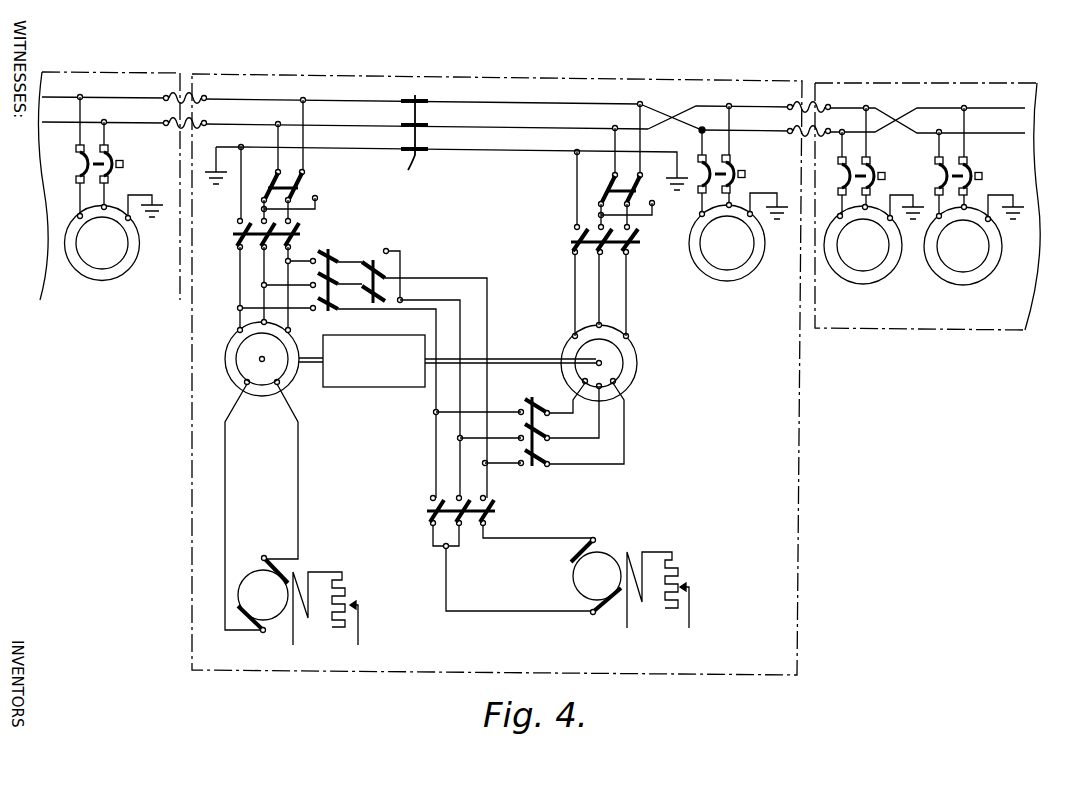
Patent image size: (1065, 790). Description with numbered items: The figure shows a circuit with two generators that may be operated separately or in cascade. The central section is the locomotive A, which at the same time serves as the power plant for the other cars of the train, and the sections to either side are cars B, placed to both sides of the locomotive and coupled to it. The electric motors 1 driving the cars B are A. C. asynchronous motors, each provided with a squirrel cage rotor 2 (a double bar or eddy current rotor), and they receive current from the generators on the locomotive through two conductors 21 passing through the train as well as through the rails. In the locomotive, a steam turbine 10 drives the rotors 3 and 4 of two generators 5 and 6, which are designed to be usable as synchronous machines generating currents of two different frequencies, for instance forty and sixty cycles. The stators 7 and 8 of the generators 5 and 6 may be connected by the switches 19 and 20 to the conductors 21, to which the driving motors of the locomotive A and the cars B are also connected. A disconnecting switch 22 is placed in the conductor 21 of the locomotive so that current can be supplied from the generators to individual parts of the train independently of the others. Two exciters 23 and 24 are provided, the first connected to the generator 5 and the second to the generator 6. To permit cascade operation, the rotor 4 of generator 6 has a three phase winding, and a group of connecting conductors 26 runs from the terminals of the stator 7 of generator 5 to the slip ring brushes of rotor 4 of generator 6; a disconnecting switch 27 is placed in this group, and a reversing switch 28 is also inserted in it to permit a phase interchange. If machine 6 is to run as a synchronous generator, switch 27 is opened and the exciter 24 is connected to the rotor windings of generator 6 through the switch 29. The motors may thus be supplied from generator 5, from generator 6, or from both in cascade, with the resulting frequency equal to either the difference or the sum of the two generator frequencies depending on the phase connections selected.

The electric motors 1 is at (140, 248).
The squirrel cage rotor 2 is at (121, 266).
The rotor 3 is at (283, 384).
The rotor 4 is at (580, 350).
The generator 5 is at (210, 384).
The generator 6 is at (658, 356).
The stator 7 is at (289, 381).
The stator 8 is at (638, 372).
The steam turbine 10 is at (398, 381).
The switch 19 is at (245, 233).
The switch 20 is at (636, 243).
The conductors 21 is at (541, 112).
The disconnecting switch 22 is at (412, 138).
The exciter 23 is at (322, 564).
The exciter 24 is at (650, 541).
The connecting conductors 26 is at (468, 322).
The disconnecting switch 27 is at (331, 254).
The reversing switch 28 is at (376, 260).
The switch 29 is at (497, 511).
The locomotive A is at (551, 80).
The cars B is at (106, 72).